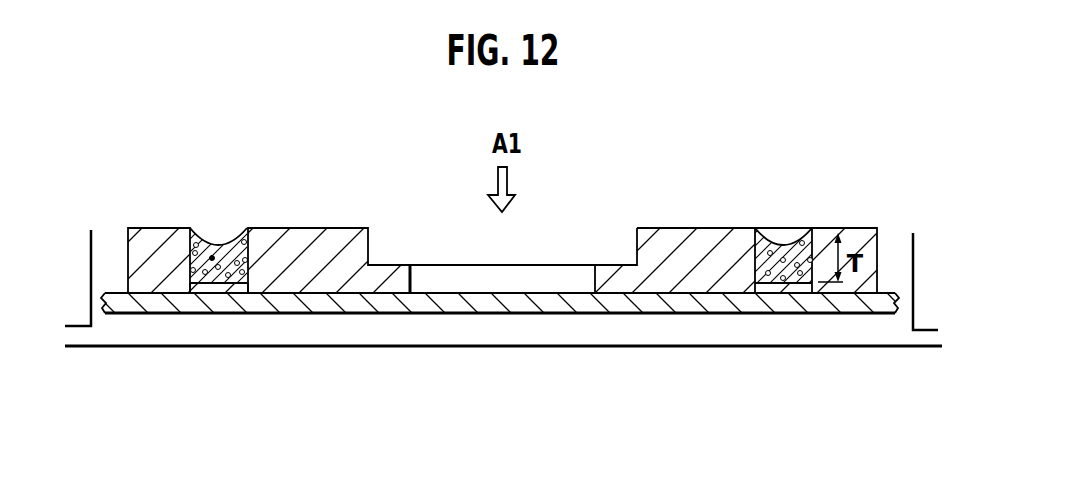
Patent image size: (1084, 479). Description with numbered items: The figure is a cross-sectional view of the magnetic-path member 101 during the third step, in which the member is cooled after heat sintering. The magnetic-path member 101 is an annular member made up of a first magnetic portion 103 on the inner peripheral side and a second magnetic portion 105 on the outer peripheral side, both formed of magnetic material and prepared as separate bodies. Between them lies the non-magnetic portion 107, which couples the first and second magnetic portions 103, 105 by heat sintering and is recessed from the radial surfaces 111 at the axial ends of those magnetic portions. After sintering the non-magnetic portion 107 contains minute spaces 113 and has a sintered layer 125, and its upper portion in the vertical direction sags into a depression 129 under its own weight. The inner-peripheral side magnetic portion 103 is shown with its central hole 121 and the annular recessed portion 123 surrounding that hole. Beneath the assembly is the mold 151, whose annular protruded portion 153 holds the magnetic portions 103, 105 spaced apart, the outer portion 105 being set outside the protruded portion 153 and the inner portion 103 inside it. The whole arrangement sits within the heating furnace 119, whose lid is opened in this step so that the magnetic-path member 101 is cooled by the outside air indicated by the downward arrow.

The magnetic-path member 101 is at (860, 212).
The first magnetic portion 103 is at (308, 217).
The second magnetic portion 105 is at (160, 217).
The non-magnetic portion 107 is at (210, 217).
The radial surfaces 111 is at (697, 228).
The minute spaces 113 is at (250, 283).
The heating furnace 119 is at (84, 277).
The central hole 121 is at (423, 265).
The annular recessed portion 123 is at (636, 262).
The sintered layer 125 is at (748, 284).
The depression 129 is at (790, 228).
The mold 151 is at (86, 305).
The annular protruded portion 153 is at (197, 283).